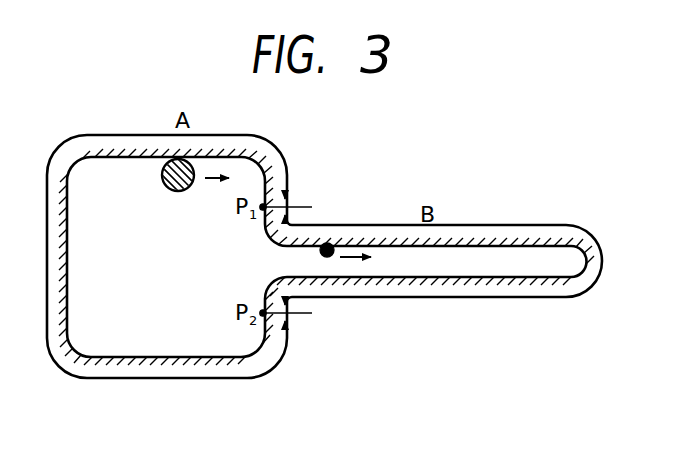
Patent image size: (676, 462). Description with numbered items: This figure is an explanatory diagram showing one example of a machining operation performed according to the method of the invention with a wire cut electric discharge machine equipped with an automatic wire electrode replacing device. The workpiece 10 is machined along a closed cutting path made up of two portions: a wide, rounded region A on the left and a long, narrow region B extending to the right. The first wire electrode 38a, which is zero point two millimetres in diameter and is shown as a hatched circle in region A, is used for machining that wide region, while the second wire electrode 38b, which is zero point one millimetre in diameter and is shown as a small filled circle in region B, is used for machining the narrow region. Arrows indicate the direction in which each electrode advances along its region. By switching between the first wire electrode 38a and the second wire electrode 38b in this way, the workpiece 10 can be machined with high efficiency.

The conduit / channel body 10 is at (405, 283).
The first wire electrode 38a is at (172, 190).
The second wire electrode 38b is at (333, 243).